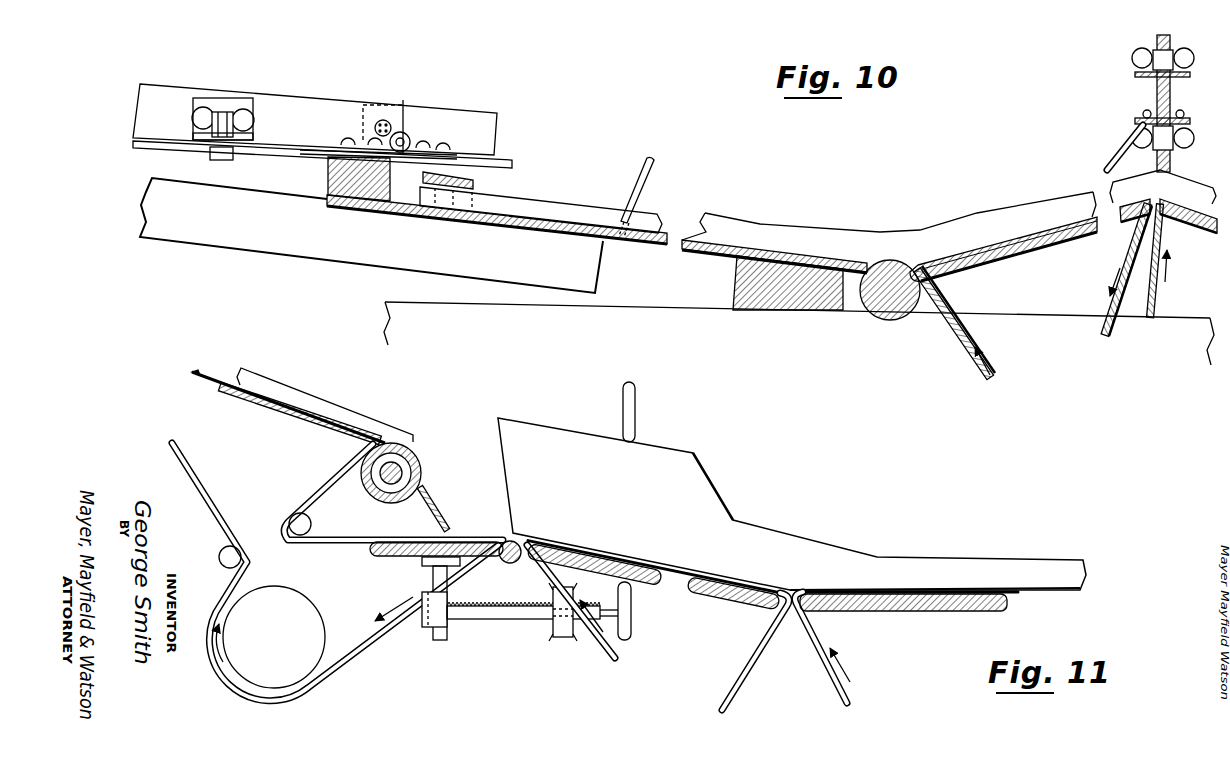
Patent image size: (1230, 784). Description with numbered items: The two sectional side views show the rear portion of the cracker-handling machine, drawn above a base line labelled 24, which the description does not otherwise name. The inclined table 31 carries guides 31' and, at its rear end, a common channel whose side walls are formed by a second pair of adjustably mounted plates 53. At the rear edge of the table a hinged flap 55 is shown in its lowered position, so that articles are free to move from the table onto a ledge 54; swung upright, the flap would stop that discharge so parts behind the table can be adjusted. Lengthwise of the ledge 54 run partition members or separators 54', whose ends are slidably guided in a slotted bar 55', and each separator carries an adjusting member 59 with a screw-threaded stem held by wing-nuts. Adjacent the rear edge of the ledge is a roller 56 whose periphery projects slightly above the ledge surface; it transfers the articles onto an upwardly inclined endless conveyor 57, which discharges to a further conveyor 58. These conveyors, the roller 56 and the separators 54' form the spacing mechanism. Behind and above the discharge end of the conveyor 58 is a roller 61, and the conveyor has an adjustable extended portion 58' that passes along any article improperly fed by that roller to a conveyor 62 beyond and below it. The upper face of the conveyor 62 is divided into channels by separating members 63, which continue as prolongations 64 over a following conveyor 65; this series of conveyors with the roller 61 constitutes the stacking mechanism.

In FIG. 10, the base 24 is at (799, 333).
In FIG. 10, the table 31 is at (371, 235).
In FIG. 10, the guides 31' is at (315, 108).
In FIG. 10, the adjustably mounted plates 53 is at (165, 97).
In FIG. 10, the ledge 54 is at (712, 243).
In FIG. 11, the ledge 54 is at (302, 397).
In FIG. 10, the separators 54' is at (541, 194).
In FIG. 10, the hinged flap 55 is at (322, 128).
In FIG. 10, the slotted bar 55' is at (479, 159).
In FIG. 10, the roller 56 is at (877, 313).
In FIG. 10, the endless conveyor 57 is at (962, 333).
In FIG. 10, the conveyor 58 is at (1159, 253).
In FIG. 11, the conveyor 58 is at (360, 457).
In FIG. 11, the adjustable extended portion 58' is at (436, 576).
In FIG. 10, the adjusting members 59 is at (1157, 100).
In FIG. 11, the adjusting members 59 is at (637, 398).
In FIG. 11, the roller 61 is at (412, 462).
In FIG. 11, the conveyor 62 is at (556, 601).
In FIG. 11, the separating members 63 is at (792, 504).
In FIG. 11, the separator continuations 64 is at (930, 573).
In FIG. 11, the conveyor 65 is at (818, 644).